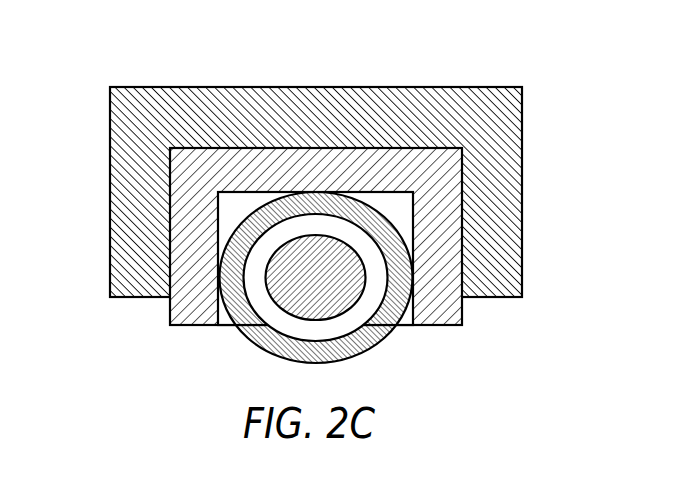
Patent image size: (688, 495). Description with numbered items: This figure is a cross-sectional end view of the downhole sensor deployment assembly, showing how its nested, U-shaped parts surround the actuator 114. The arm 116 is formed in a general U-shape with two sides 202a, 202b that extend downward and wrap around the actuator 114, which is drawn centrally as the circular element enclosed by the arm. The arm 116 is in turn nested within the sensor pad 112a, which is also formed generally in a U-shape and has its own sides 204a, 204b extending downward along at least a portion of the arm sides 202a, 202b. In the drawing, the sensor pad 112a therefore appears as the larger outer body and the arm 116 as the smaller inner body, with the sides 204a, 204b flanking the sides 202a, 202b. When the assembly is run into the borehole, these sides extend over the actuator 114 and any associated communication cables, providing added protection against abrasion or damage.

The sensor pad 112a is at (398, 85).
The side of sensor pad 204a is at (147, 157).
The side of sensor pad 204b is at (487, 145).
The arm 116 is at (160, 225).
The side of arm 202a is at (178, 281).
The side of arm 202b is at (452, 267).
The actuator 114 is at (217, 343).